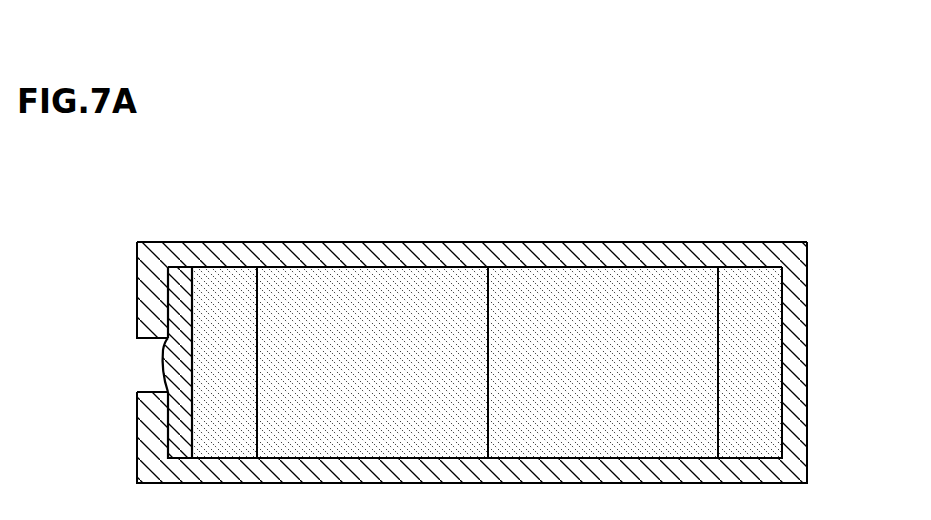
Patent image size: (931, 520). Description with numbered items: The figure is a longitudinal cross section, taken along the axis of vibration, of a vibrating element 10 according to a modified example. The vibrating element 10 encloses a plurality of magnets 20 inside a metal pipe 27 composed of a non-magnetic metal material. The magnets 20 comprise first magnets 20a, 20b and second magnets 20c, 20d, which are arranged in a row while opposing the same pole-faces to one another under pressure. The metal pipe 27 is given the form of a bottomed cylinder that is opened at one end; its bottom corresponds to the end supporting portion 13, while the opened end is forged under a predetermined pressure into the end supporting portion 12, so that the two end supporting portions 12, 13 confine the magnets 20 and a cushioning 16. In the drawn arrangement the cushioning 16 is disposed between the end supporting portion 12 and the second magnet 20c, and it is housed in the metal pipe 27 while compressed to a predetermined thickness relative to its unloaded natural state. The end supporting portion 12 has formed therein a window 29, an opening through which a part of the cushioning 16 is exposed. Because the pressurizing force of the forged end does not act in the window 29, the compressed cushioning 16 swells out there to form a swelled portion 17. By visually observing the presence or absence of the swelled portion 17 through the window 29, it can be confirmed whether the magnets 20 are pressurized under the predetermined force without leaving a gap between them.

The vibrating element 10 is at (640, 120).
The end supporting portion 12 is at (137, 290).
The end supporting portion 13 is at (807, 295).
The cushioning 16 is at (180, 280).
The swelled portion 17 is at (165, 367).
The magnets 20 is at (456, 208).
The first magnet 20a is at (360, 278).
The first magnet 20b is at (602, 282).
The second magnet 20c is at (222, 278).
The second magnet 20d is at (748, 282).
The metal pipe 27 is at (510, 243).
The window 29 is at (152, 381).